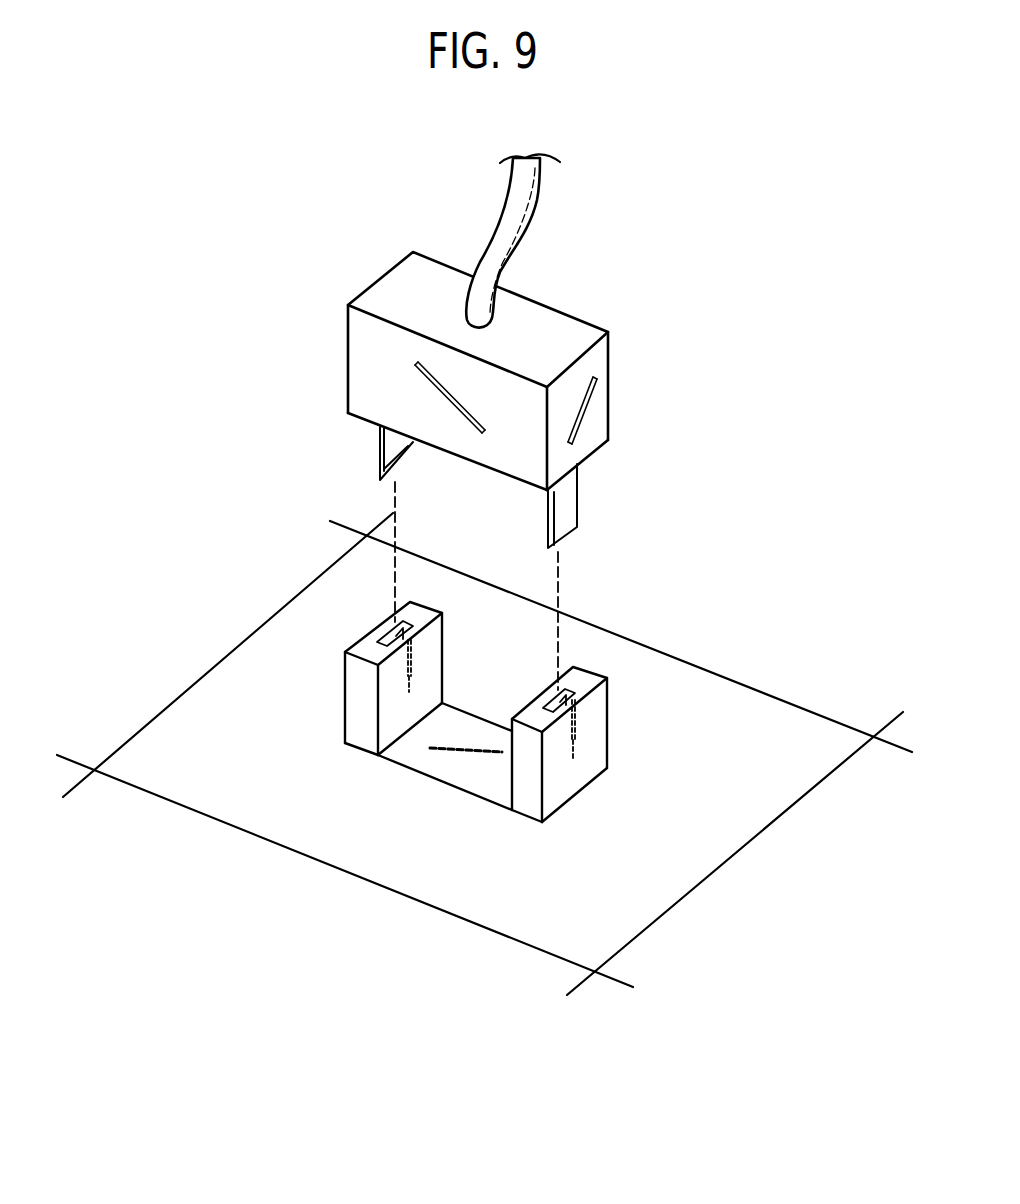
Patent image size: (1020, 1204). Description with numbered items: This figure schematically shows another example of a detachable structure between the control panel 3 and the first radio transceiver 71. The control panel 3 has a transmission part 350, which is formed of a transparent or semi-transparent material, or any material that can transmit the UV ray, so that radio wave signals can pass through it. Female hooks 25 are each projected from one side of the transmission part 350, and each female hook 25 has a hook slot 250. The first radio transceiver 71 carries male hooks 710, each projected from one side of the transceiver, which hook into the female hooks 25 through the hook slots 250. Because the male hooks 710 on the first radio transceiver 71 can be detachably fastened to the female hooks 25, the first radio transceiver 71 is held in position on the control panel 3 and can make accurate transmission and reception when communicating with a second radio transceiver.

The control panel 3 is at (360, 888).
The female hook 25 is at (602, 792).
The hook slot 250 is at (577, 663).
The transmission part 350 is at (477, 772).
The first radio transceiver 71 is at (618, 386).
The male hook 710 is at (568, 508).